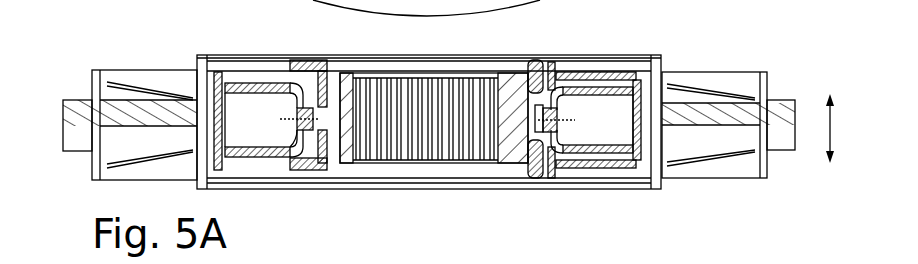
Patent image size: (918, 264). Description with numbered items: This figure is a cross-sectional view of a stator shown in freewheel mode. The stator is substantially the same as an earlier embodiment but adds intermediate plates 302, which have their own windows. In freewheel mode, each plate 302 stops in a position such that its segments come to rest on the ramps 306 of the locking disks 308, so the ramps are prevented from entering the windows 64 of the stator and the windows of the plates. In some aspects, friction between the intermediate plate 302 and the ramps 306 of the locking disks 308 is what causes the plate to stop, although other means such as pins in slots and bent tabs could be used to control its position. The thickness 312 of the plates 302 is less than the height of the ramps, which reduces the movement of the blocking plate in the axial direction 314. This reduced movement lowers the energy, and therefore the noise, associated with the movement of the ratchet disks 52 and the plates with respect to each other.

The ratchet disks 52 is at (593, 72).
The windows 64 is at (263, 80).
The intermediate plates 302 is at (330, 66).
The ramps 306 is at (238, 81).
The locking disks 308 is at (306, 151).
The thickness 312 is at (308, 106).
The axial direction 314 is at (832, 128).